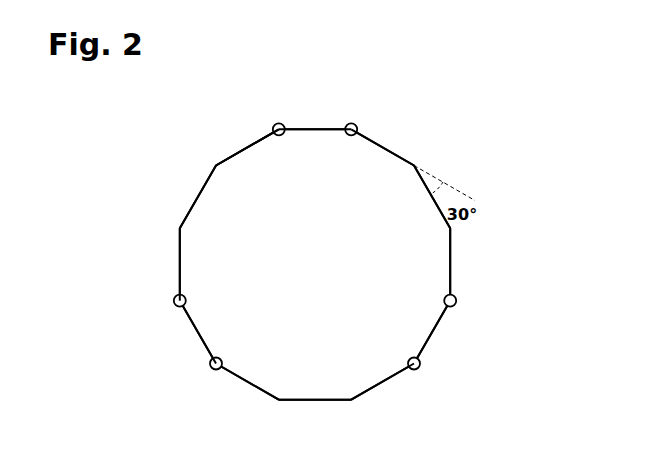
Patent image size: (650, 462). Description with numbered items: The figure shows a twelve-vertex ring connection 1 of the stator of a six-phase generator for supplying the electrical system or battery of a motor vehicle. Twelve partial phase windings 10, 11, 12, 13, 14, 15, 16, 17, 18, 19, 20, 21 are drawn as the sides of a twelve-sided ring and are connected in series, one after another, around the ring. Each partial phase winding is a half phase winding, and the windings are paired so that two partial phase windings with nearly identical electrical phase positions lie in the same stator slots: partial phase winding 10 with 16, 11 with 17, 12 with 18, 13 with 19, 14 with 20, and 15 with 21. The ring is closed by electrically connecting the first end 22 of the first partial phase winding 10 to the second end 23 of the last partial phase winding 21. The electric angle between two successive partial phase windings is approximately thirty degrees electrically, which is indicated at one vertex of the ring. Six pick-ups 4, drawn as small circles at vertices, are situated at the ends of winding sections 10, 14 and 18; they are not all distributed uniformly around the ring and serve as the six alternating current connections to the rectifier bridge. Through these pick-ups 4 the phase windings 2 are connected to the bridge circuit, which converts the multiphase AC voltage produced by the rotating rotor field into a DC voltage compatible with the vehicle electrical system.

The ring connection 1 is at (496, 158).
The phase windings 2 is at (433, 330).
The pick-ups 4 is at (357, 126).
The partial phase winding 10 is at (315, 130).
The partial phase winding 11 is at (370, 140).
The partial phase winding 12 is at (436, 204).
The partial phase winding 13 is at (449, 270).
The partial phase winding 14 is at (429, 337).
The partial phase winding 15 is at (380, 383).
The partial phase winding 16 is at (310, 399).
The partial phase winding 17 is at (246, 380).
The partial phase winding 18 is at (196, 328).
The partial phase winding 19 is at (181, 260).
The partial phase winding 20 is at (199, 195).
The partial phase winding 21 is at (250, 146).
The first end 22 is at (300, 129).
The second end 23 is at (274, 125).